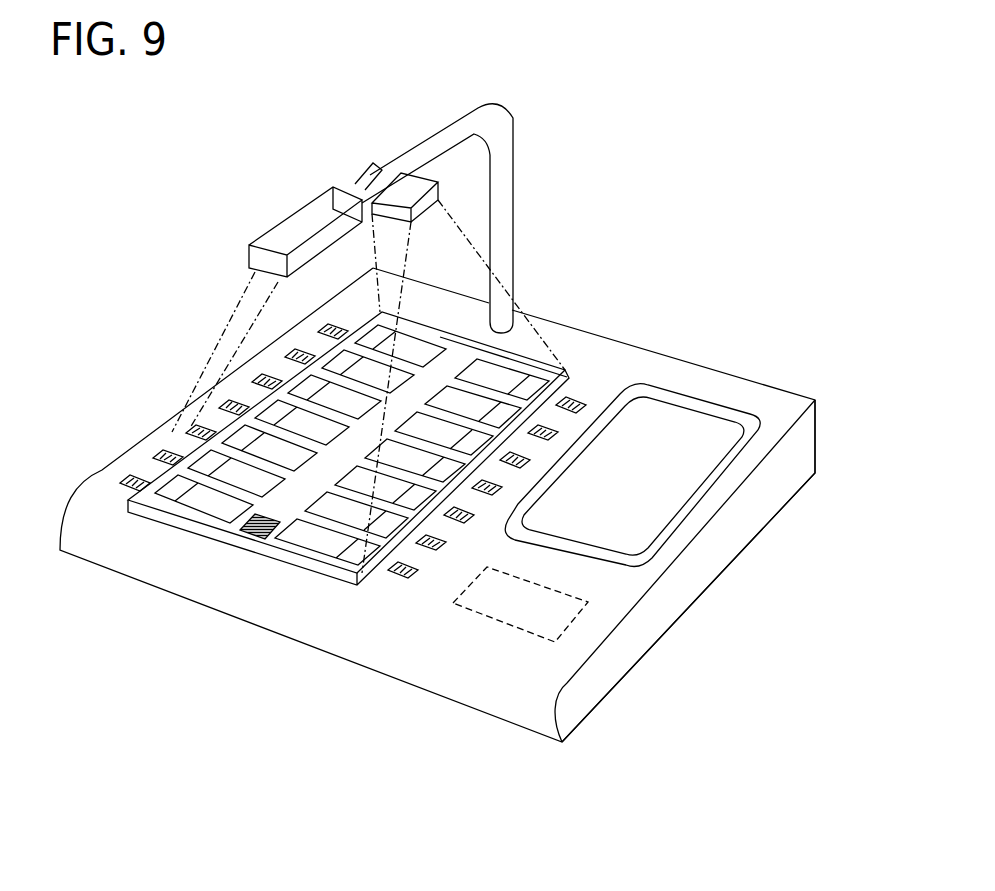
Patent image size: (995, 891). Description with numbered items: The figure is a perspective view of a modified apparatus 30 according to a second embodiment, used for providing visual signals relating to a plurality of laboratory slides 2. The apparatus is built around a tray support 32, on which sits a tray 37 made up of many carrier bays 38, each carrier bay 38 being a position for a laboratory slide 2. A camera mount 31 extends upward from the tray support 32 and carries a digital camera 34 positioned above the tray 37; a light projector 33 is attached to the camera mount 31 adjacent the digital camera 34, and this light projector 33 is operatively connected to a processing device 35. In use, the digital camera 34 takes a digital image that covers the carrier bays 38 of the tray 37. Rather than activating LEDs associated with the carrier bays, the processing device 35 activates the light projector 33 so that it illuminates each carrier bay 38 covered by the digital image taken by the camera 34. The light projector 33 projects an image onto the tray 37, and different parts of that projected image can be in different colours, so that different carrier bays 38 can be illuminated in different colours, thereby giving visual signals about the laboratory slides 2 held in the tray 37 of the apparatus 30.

The laboratory slide 2 is at (309, 540).
The modified apparatus 30 is at (197, 613).
The camera mount 31 is at (515, 228).
The tray support 32 is at (737, 560).
The light projector 33 is at (438, 182).
The digital camera 34 is at (287, 222).
The processing device 35 is at (487, 617).
The tray 37 is at (187, 527).
The carrier bay 38 is at (342, 560).